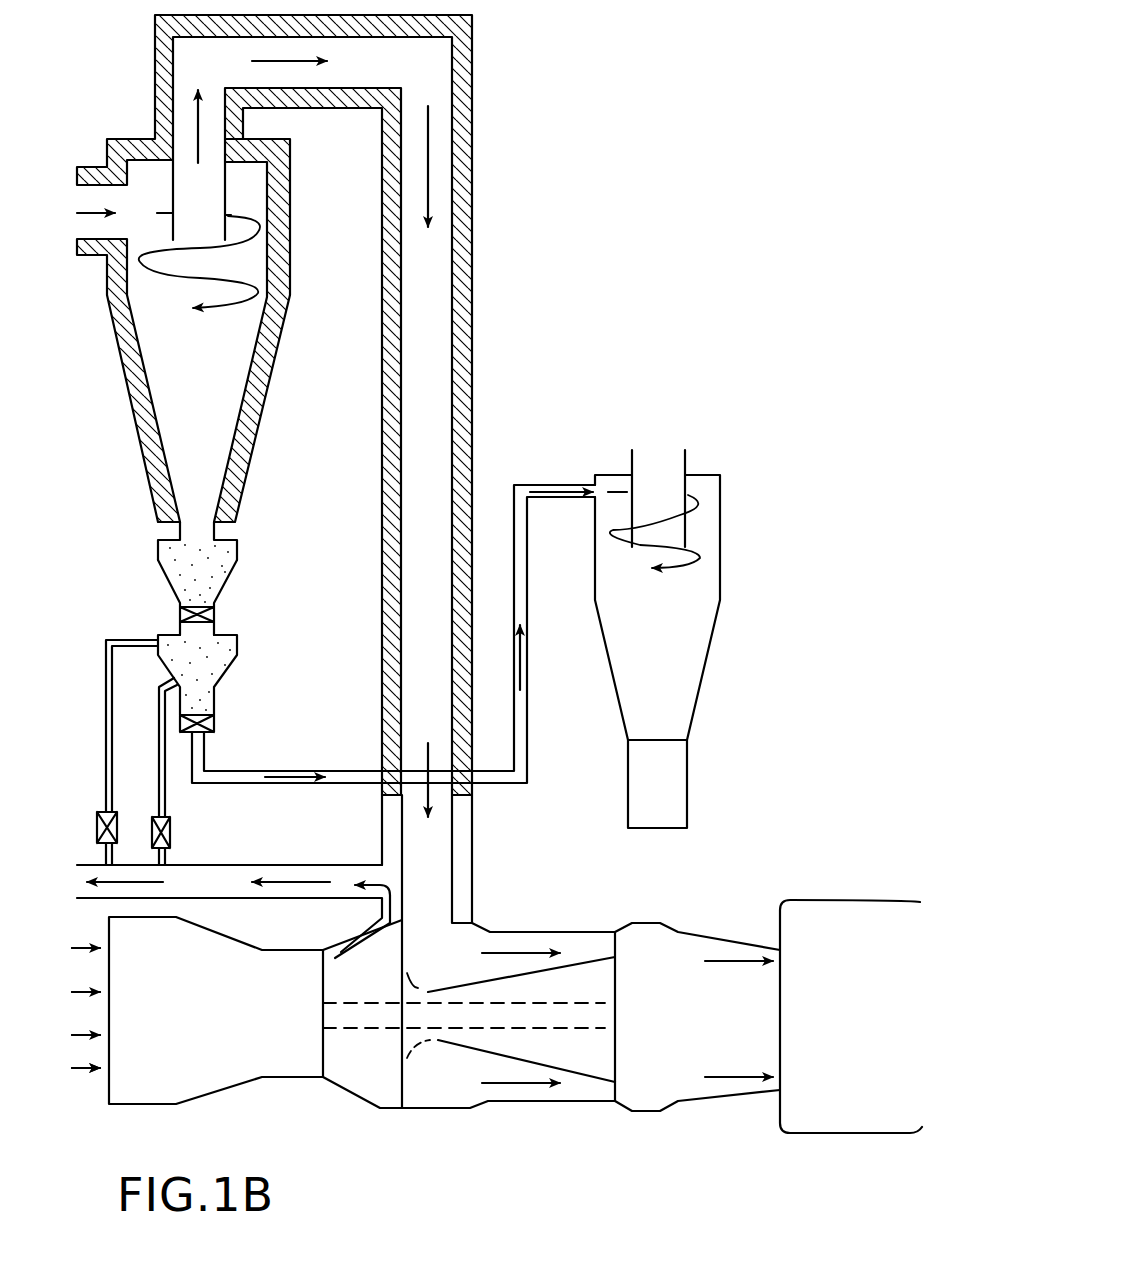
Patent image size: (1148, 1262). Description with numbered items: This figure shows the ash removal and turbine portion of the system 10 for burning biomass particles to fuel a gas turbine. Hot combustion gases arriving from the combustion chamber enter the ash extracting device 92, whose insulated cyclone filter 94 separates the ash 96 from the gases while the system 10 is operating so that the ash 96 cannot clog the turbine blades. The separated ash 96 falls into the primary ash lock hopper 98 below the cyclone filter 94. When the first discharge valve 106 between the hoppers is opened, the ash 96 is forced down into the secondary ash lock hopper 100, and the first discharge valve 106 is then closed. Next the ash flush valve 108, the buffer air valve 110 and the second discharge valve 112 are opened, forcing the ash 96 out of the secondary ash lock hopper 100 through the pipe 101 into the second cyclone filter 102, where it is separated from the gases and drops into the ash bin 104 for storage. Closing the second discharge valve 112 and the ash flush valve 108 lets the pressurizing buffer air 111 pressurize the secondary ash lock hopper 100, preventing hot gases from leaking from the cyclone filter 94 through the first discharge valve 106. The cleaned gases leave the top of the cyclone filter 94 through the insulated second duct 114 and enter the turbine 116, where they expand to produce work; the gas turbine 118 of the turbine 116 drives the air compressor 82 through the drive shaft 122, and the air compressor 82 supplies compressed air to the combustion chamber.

The system for burning biomass particles 10 is at (655, 123).
The air compressor 82 is at (175, 1022).
The ash extracting device 92 is at (282, 512).
The cyclone filter 94 is at (143, 440).
The ash 96 is at (212, 572).
The primary ash lock hopper 98 is at (160, 540).
The secondary ash lock hopper 100 is at (237, 647).
The pipe 101 is at (530, 485).
The second cyclone filter 102 is at (703, 605).
The ash bin 104 is at (677, 782).
The first discharge valve 106 is at (178, 617).
The ash flush valve 108 is at (110, 780).
The buffer air valve 110 is at (167, 803).
The pressurizing buffer air 111 is at (170, 814).
The second discharge valve 112 is at (214, 715).
The second duct 114 is at (478, 307).
The turbine 116 is at (710, 878).
The gas turbine 118 is at (596, 1060).
The drive shaft 122 is at (357, 1022).